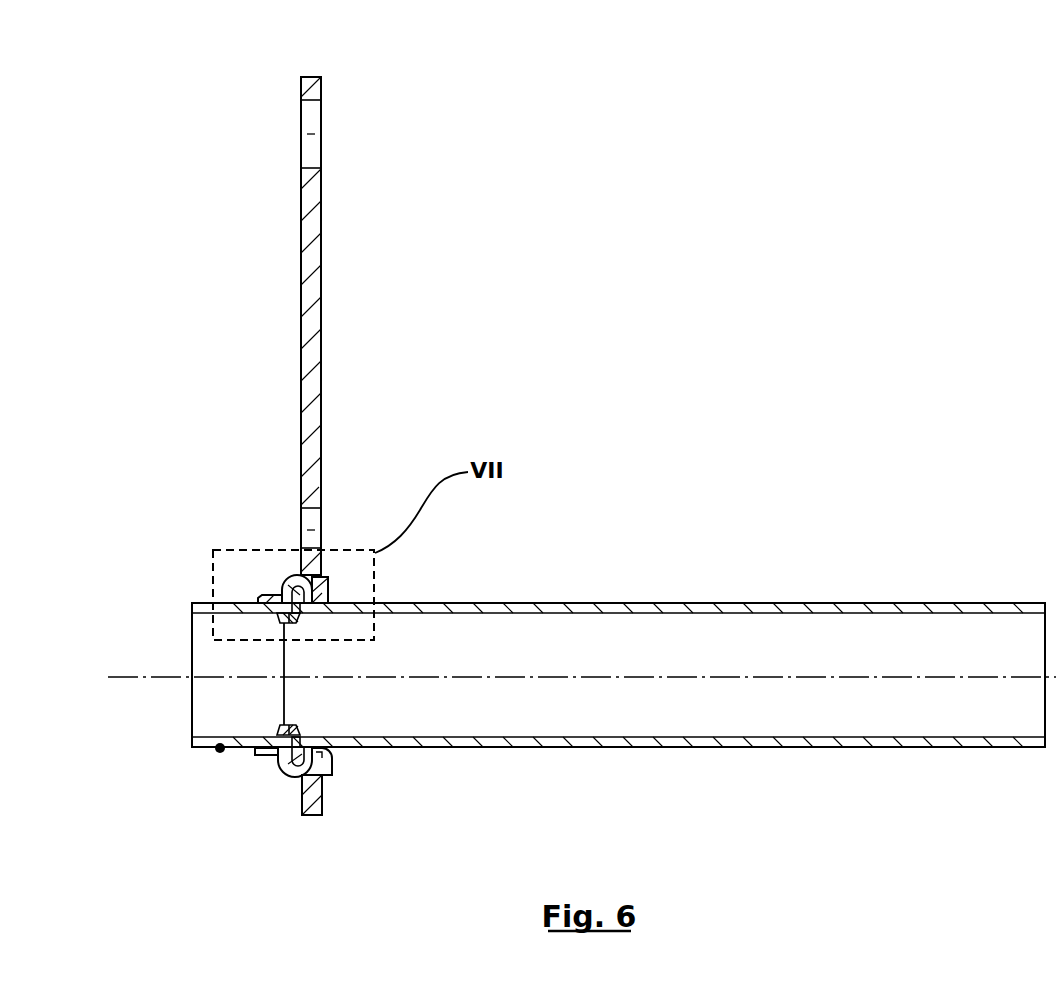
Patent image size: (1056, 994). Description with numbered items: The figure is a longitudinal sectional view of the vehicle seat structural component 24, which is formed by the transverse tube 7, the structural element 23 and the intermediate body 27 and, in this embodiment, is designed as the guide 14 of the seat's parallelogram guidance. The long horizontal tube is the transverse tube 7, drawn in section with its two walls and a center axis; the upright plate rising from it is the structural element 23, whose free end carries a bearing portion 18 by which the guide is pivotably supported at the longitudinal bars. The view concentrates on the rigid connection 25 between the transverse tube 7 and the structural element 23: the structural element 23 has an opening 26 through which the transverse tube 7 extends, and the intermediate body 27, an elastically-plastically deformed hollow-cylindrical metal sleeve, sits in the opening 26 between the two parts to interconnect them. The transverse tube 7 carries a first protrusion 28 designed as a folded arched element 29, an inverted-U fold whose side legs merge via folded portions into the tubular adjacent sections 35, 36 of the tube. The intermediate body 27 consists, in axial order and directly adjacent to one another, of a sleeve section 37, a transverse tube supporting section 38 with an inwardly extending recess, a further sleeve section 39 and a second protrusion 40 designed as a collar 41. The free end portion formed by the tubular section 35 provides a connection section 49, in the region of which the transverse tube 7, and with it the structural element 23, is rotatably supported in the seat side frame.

The transverse tube 7 is at (900, 603).
The guide 14 is at (385, 316).
The structural element 23 is at (313, 193).
The bearing portion 18 is at (314, 101).
The vehicle seat structural component 24 is at (617, 122).
The rigid connection 25 is at (264, 773).
The opening 26 is at (333, 760).
The intermediate body 27 is at (300, 777).
The first protrusion 28 is at (293, 588).
The folded arched element 29 is at (293, 588).
The tubular adjacent section 35 is at (242, 745).
The tubular adjacent section 36 is at (425, 747).
The sleeve section 37 is at (260, 598).
The transverse tube supporting section 38 is at (286, 566).
The sleeve section 39 is at (312, 600).
The second protrusion 40 is at (386, 582).
The collar 41 is at (325, 588).
The connection section 49 is at (217, 755).